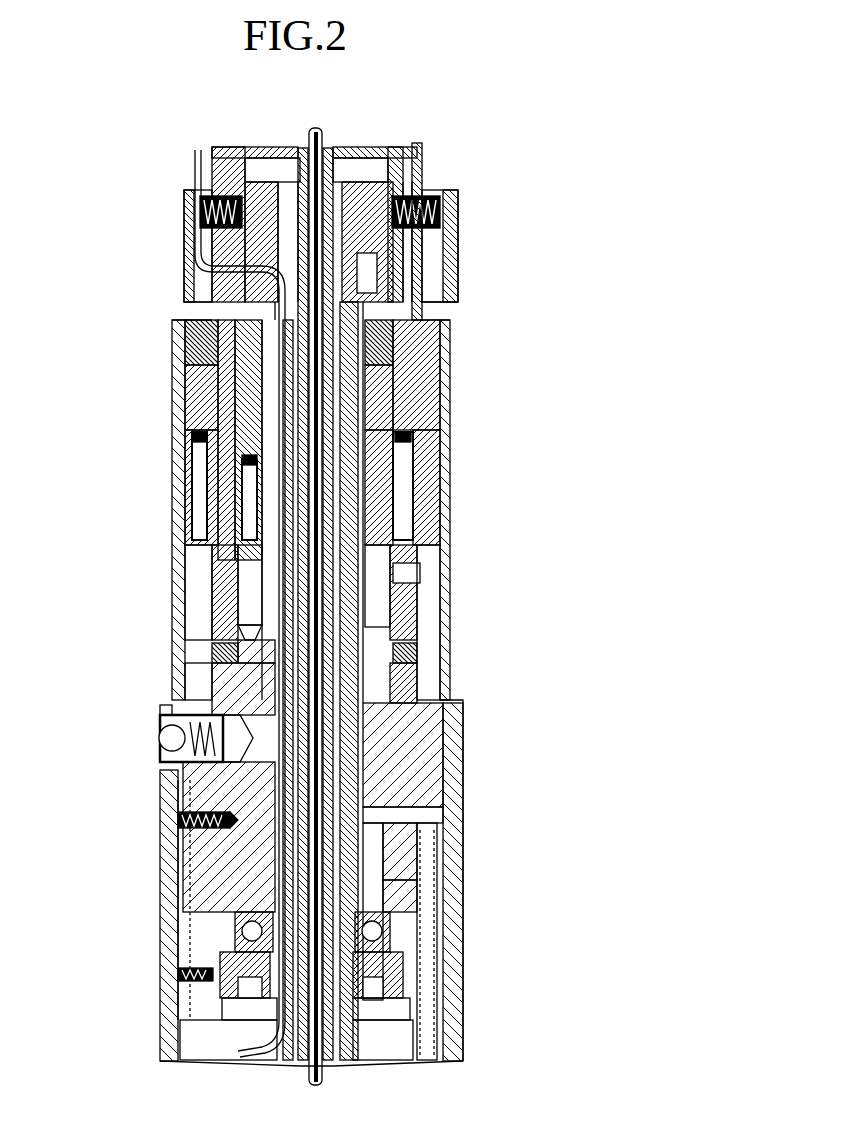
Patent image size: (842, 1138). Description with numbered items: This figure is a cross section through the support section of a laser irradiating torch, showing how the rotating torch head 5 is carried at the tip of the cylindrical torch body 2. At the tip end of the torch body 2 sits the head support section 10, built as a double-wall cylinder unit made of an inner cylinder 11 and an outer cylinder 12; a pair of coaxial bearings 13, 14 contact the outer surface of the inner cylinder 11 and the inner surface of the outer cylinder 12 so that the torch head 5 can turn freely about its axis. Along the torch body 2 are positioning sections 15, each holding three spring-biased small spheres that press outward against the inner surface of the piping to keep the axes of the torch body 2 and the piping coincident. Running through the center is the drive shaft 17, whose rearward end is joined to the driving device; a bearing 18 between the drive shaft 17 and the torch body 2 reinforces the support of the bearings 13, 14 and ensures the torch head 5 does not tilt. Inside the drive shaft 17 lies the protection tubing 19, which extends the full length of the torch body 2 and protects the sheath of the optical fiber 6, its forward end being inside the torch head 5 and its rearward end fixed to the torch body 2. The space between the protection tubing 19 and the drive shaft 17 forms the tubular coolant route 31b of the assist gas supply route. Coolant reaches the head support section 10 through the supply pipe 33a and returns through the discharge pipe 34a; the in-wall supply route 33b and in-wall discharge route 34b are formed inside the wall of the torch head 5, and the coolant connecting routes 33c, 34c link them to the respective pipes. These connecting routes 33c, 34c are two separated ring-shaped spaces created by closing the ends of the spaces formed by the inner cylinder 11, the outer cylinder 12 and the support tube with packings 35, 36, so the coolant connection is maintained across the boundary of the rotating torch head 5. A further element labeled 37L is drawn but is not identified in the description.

The torch body 2 is at (216, 870).
The torch head 5 is at (158, 254).
The optical fiber 6 is at (318, 893).
The head support section 10 is at (150, 479).
The inner cylinder 11 is at (250, 600).
The outer cylinder 12 is at (178, 579).
The bearing 13 is at (246, 513).
The bearing 14 is at (200, 446).
The positioning section 15 is at (128, 722).
The drive shaft 17 is at (346, 795).
The bearing 18 is at (235, 935).
The protection tubing 19 is at (332, 714).
The tubular coolant route 31b is at (336, 685).
The supply pipe 33a is at (185, 903).
The in-wall supply route 33b is at (214, 370).
The coolant connecting route 33c is at (220, 625).
The discharge pipe 34a is at (438, 850).
The in-wall discharge route 34b is at (406, 471).
The coolant connecting route 34c is at (388, 597).
The packing 35 is at (384, 367).
The packing 36 is at (438, 385).
The spring 37L is at (410, 655).